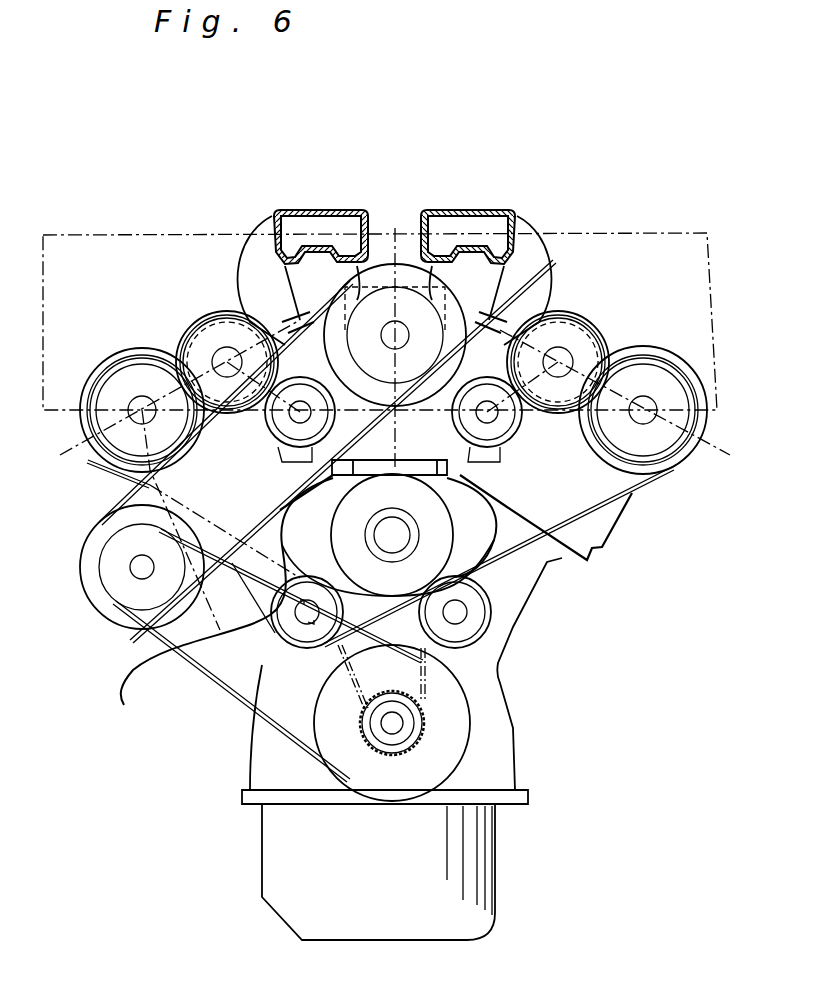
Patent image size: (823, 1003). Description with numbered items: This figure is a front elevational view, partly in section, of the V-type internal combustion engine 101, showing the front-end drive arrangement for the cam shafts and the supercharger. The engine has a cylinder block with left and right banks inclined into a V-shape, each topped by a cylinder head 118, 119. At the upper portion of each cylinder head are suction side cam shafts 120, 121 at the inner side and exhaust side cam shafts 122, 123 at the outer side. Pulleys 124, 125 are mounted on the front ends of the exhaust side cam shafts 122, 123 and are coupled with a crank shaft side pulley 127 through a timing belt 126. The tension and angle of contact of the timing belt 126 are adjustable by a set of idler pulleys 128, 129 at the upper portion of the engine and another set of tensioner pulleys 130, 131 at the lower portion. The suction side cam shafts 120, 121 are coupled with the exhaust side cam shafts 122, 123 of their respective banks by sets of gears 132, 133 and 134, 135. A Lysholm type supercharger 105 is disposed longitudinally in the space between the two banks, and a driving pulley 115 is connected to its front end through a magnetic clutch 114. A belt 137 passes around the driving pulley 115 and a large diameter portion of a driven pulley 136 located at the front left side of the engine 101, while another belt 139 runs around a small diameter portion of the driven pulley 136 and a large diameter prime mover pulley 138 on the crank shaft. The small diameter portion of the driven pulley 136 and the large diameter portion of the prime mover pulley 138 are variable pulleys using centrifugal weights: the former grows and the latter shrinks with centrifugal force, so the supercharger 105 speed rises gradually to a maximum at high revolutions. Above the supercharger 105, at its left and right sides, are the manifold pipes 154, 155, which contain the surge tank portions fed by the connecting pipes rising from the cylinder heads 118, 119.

The V-type internal combustion engine 101 is at (483, 96).
The supercharger 105 is at (556, 272).
The magnetic clutch 114 is at (374, 280).
The driving pulley 115 is at (405, 300).
The cylinder head 118 is at (150, 485).
The cylinder head 119 is at (610, 512).
The suction side cam shaft 120 is at (185, 332).
The suction side cam shaft 121 is at (583, 338).
The exhaust side cam shaft 122 is at (108, 422).
The exhaust side cam shaft 123 is at (655, 418).
The pulley 124 is at (93, 373).
The pulley 125 is at (690, 363).
The timing belt 126 is at (562, 558).
The crank shaft side pulley 127 is at (427, 694).
The idler pulley 128 is at (243, 348).
The idler pulley 129 is at (545, 352).
The tensioner pulley 130 is at (268, 625).
The tensioner pulley 131 is at (493, 617).
The gear 132 is at (180, 340).
The gear 133 is at (125, 363).
The gear 134 is at (607, 332).
The gear 135 is at (660, 355).
The driven pulley 136 is at (92, 580).
The belt 137 is at (173, 640).
The prime mover pulley 138 is at (457, 748).
The belt 139 is at (300, 693).
The manifold pipe 154 is at (297, 221).
The manifold pipe 155 is at (467, 221).